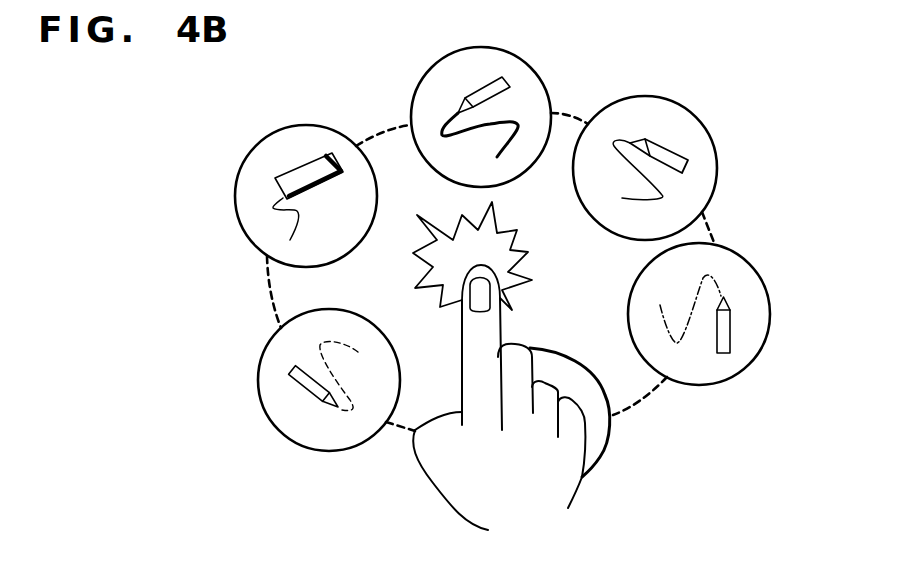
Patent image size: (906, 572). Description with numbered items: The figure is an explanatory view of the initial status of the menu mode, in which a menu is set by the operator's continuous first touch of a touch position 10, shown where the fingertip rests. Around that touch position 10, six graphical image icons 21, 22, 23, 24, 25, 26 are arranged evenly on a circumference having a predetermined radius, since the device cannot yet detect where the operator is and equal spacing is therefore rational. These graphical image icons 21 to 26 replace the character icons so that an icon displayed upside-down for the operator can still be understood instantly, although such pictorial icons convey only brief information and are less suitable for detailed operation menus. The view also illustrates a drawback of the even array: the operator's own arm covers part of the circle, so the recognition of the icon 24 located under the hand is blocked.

The touch position 10 is at (513, 245).
The graphical image icon 21 is at (410, 87).
The graphical image icon 22 is at (705, 130).
The graphical image icon 23 is at (762, 275).
The graphical image icon 24 is at (603, 457).
The graphical image icon 25 is at (300, 445).
The graphical image icon 26 is at (233, 198).